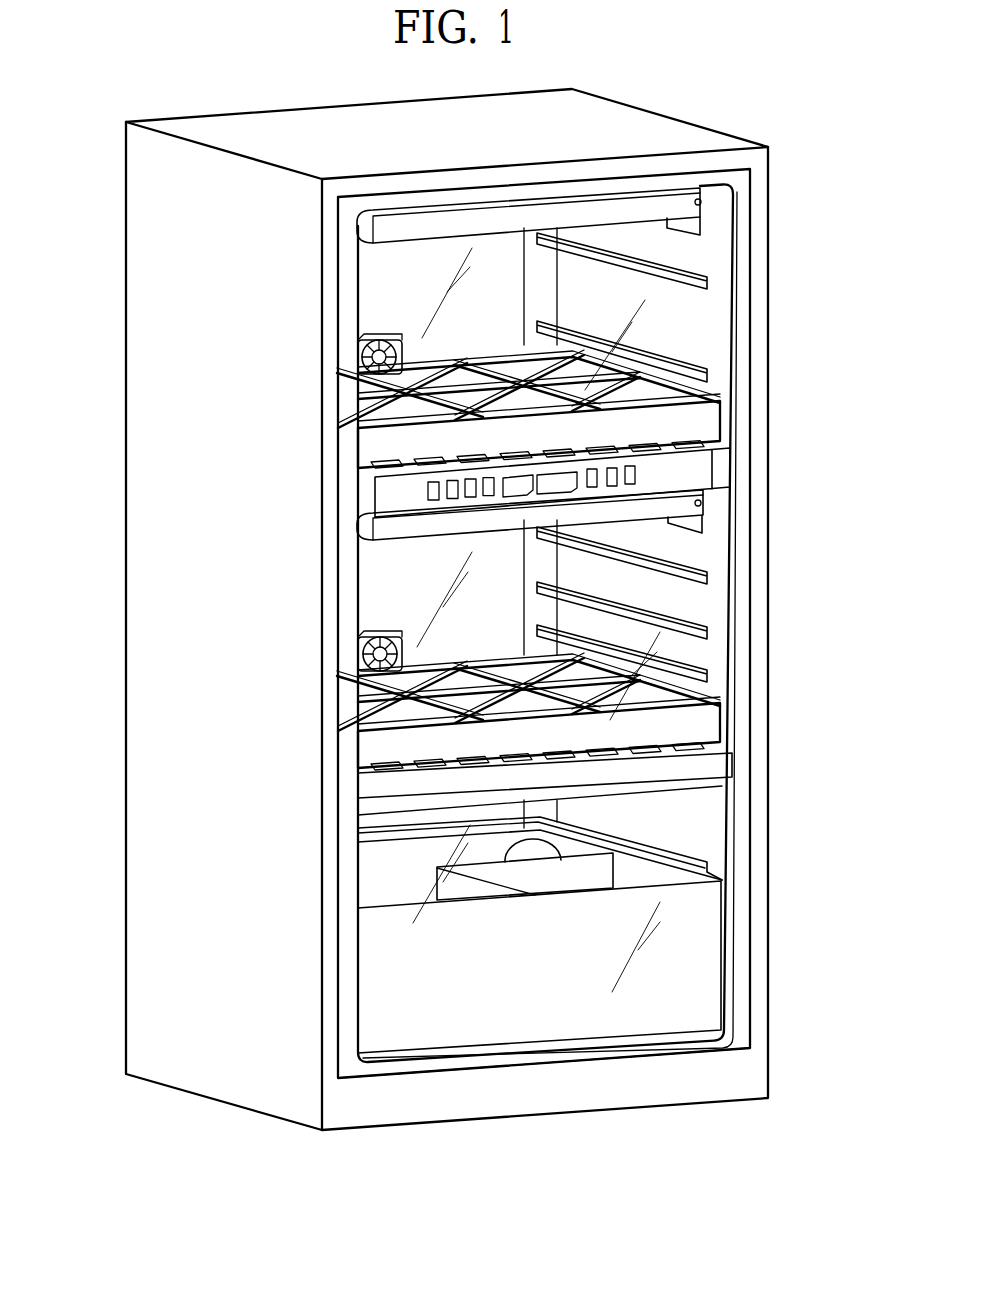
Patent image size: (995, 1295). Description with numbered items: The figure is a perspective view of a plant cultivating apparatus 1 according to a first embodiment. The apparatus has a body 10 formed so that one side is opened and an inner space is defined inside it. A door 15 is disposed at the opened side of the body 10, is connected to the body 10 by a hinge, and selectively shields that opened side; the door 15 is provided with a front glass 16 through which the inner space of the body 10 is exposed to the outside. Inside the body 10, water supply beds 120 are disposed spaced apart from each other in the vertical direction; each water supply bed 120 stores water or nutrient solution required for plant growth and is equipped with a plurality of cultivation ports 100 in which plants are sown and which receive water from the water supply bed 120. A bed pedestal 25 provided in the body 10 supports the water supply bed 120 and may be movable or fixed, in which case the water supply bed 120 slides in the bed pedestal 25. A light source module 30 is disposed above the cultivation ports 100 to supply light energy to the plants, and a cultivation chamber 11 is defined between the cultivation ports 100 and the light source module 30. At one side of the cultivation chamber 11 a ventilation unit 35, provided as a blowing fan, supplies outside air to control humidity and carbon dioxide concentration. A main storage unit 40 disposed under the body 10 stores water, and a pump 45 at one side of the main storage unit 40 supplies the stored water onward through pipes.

The plant cultivating apparatus 1 is at (129, 33).
The body 10 is at (157, 524).
The cultivation chamber 11 is at (487, 288).
The door 15 is at (348, 1022).
The front glass 16 is at (408, 1038).
The bed pedestal 25 is at (723, 465).
The light source module 30 is at (392, 227).
The ventilation unit 35 is at (377, 656).
The main storage unit 40 is at (588, 981).
The pump 45 is at (557, 835).
The cultivation port 100 is at (452, 560).
The water supply bed 120 is at (382, 452).